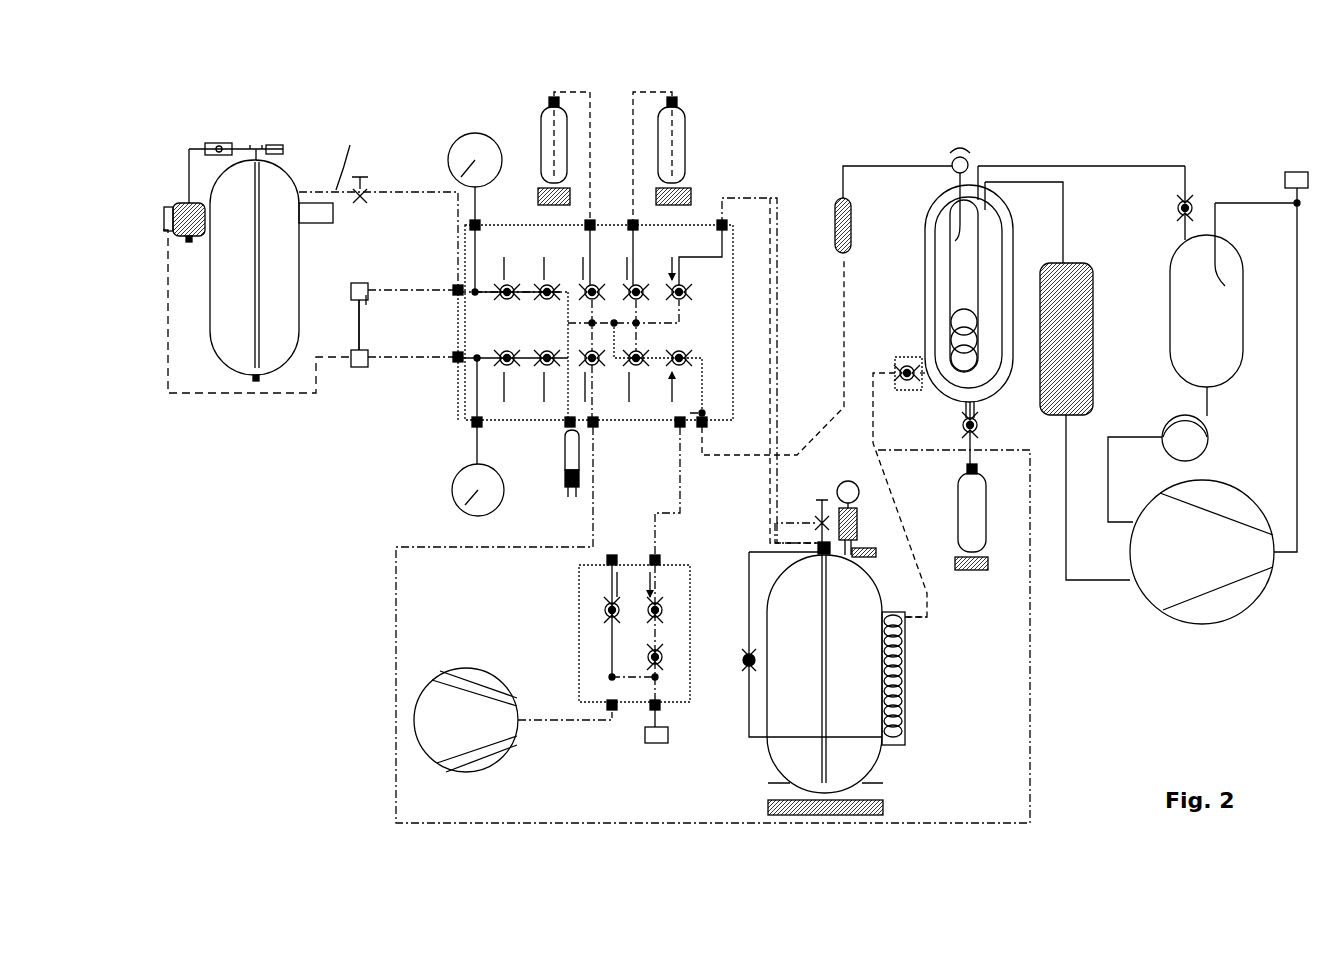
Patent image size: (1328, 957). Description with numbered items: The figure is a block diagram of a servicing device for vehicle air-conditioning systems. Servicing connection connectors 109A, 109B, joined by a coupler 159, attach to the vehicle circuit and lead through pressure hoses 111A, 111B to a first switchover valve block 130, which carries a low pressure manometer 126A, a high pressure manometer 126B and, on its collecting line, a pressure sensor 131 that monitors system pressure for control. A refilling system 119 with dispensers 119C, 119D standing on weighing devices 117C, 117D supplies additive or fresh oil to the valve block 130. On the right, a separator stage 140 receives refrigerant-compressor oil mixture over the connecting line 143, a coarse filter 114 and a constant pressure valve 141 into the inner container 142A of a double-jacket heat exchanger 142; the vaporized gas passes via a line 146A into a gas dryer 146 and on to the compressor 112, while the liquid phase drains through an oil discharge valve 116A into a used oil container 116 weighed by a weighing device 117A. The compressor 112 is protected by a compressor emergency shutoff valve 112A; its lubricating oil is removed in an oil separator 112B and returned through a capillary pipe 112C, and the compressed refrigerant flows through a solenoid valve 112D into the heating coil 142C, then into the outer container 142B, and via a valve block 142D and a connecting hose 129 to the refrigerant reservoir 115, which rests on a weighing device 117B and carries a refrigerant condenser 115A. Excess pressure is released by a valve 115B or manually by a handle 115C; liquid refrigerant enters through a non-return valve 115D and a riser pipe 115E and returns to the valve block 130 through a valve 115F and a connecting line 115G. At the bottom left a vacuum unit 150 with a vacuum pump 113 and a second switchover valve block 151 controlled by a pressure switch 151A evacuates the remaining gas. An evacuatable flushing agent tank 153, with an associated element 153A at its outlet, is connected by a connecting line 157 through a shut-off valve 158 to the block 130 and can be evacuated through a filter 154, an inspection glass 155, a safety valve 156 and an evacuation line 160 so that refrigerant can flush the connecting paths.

The compressor 112 is at (1202, 627).
The compressor emergency shutoff valve 112A is at (1292, 170).
The oil separator 112B is at (1168, 279).
The capillary pipe 112C is at (1238, 440).
The solenoid valve 112D is at (1176, 209).
The vacuum pump 113 is at (466, 666).
The coarse filter 114 is at (854, 214).
The refrigerant reservoir 115 is at (764, 754).
The refrigerant condenser 115A is at (908, 678).
The valve 115B is at (876, 545).
The handle 115C is at (834, 493).
The non-return valve 115D is at (740, 662).
The riser pipe 115E is at (818, 631).
The valve 115F is at (812, 523).
The connecting line 115G is at (800, 266).
The used oil container 116 is at (1010, 513).
The oil discharge valve 116A is at (1000, 425).
The weighing device 117A is at (988, 574).
The weighing device 117B is at (886, 806).
The weighing device 117C is at (530, 189).
The weighing device 117D is at (735, 187).
The refilling system 119 is at (612, 130).
The dispenser 119C is at (539, 146).
The dispenser 119D is at (722, 147).
The low pressure manometer 126A is at (446, 158).
The high pressure manometer 126B is at (451, 490).
The connecting hose 129 is at (880, 446).
The first switchover valve block 130 is at (499, 425).
The pressure sensor 131 is at (562, 480).
The separator stage 140 is at (1103, 140).
The constant pressure valve 141 is at (960, 142).
The double-jacket heat exchanger 142 is at (922, 272).
The inner container 142A is at (1004, 220).
The outer container 142B is at (1016, 242).
The heating coil 142C is at (983, 268).
The valve block 142D is at (908, 354).
The connecting line 143 is at (838, 311).
The gas dryer 146 is at (1096, 331).
The line 146A is at (1082, 200).
The vacuum unit 150 is at (392, 681).
The second switchover valve block 151 is at (576, 633).
The pressure switch 151A is at (645, 747).
The flushing agent tank 153 is at (335, 268).
The outlet line 153A is at (357, 153).
The filter 154 is at (162, 232).
The inspection glass 155 is at (210, 140).
The safety valve 156 is at (270, 142).
The connecting line 157 is at (378, 196).
The shut-off valve 158 is at (362, 188).
The coupler 159 is at (362, 328).
The evacuation line 160 is at (229, 396).
The servicing connection connector 109A is at (360, 281).
The servicing connection connector 109B is at (360, 369).
The pressure hose 111A is at (420, 287).
The pressure hose 111B is at (420, 362).